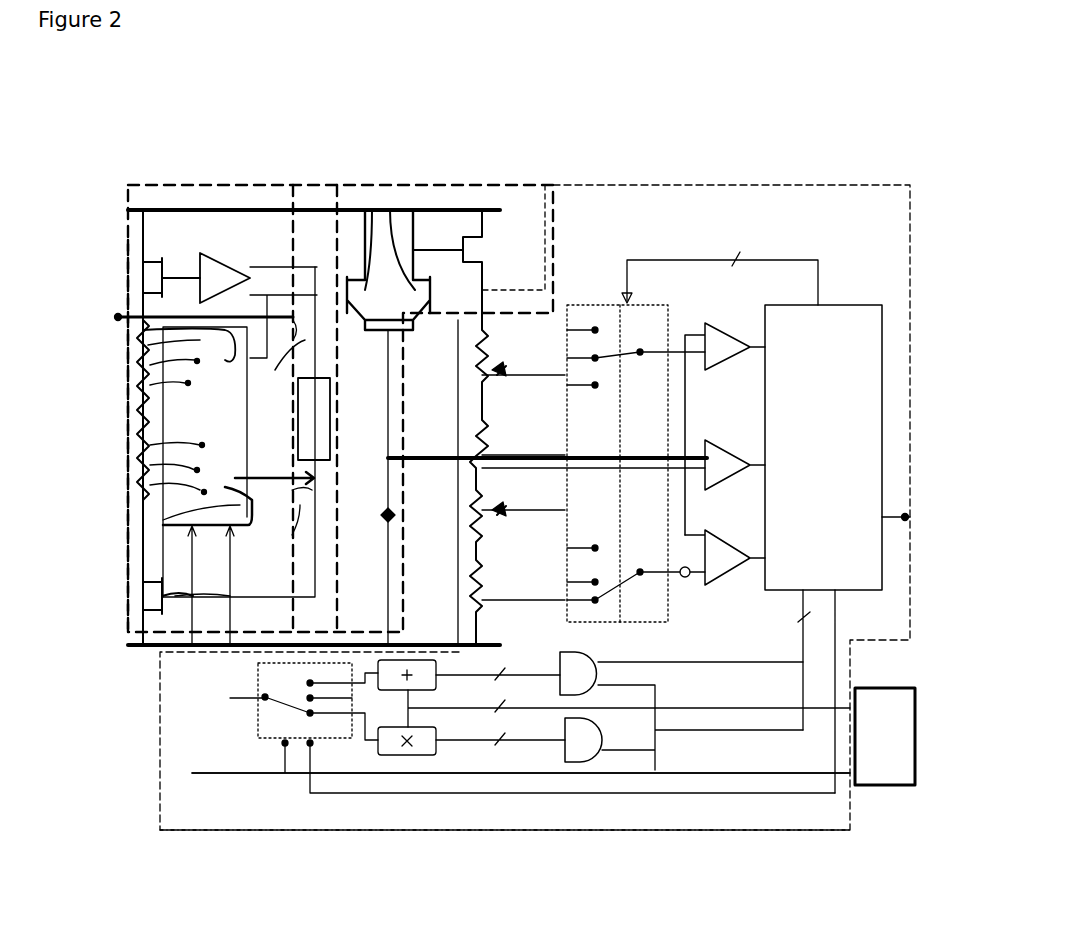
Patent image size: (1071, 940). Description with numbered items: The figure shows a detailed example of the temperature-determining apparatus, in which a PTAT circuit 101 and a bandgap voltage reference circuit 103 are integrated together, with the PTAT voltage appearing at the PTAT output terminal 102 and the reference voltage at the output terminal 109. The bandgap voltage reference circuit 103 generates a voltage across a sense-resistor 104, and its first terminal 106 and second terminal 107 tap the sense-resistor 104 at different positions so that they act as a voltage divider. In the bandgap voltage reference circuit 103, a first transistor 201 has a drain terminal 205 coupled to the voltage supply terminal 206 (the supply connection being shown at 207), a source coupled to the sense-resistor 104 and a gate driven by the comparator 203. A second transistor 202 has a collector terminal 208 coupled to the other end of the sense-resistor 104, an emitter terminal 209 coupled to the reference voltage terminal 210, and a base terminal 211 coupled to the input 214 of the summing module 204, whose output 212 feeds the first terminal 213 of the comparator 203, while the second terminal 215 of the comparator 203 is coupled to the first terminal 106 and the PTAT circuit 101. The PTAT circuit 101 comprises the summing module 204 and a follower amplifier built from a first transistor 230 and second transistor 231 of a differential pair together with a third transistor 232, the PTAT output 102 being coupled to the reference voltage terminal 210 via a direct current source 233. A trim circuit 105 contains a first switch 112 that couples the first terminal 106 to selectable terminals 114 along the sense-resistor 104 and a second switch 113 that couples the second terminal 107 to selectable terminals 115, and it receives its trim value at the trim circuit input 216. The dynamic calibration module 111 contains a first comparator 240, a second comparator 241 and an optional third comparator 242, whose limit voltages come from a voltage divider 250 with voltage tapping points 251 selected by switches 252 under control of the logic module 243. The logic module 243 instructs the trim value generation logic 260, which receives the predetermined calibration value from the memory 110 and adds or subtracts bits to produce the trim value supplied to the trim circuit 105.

The PTAT circuit 101 is at (437, 186).
The PTAT output terminal 102 is at (415, 457).
The bandgap voltage reference circuit 103 is at (300, 186).
The sense-resistor 104 is at (140, 421).
The trim circuit 105 is at (205, 462).
The first terminal 106 is at (165, 312).
The second terminal 107 is at (160, 520).
The output terminal 109 is at (115, 317).
The memory 110 is at (885, 736).
The dynamic calibration module 111 is at (705, 190).
The first switch 112 is at (210, 340).
The second switch 113 is at (165, 519).
The terminals 114 is at (160, 385).
The terminals 115 is at (150, 488).
The first transistor 201 is at (147, 277).
The second transistor 202 is at (145, 595).
The comparator 203 is at (228, 275).
The summing module 204 is at (310, 415).
The drain terminal 205 is at (143, 240).
The voltage supply terminal 206 is at (232, 210).
The supply connection 207 is at (180, 275).
The collector terminal 208 is at (145, 572).
The emitter terminal 209 is at (115, 632).
The reference voltage terminal 210 is at (148, 650).
The base terminal 211 is at (243, 576).
The output 212 is at (300, 348).
The first terminal of the comparator 213 is at (260, 265).
The input of the summing module 214 is at (297, 500).
The second terminal of the comparator 215 is at (293, 290).
The trim circuit input 216 is at (224, 662).
The first transistor of the differential pair 230 is at (372, 205).
The second transistor of the differential pair 231 is at (385, 208).
The third transistor 232 is at (480, 235).
The direct current source 233 is at (398, 520).
The first comparator 240 is at (722, 342).
The second comparator 241 is at (728, 568).
The third comparator 242 is at (732, 470).
The logic module 243 is at (766, 522).
The voltage divider 250 is at (503, 368).
The voltage tapping points 251 is at (497, 515).
The switches 252 is at (598, 300).
The trim value generation logic 260 is at (548, 788).